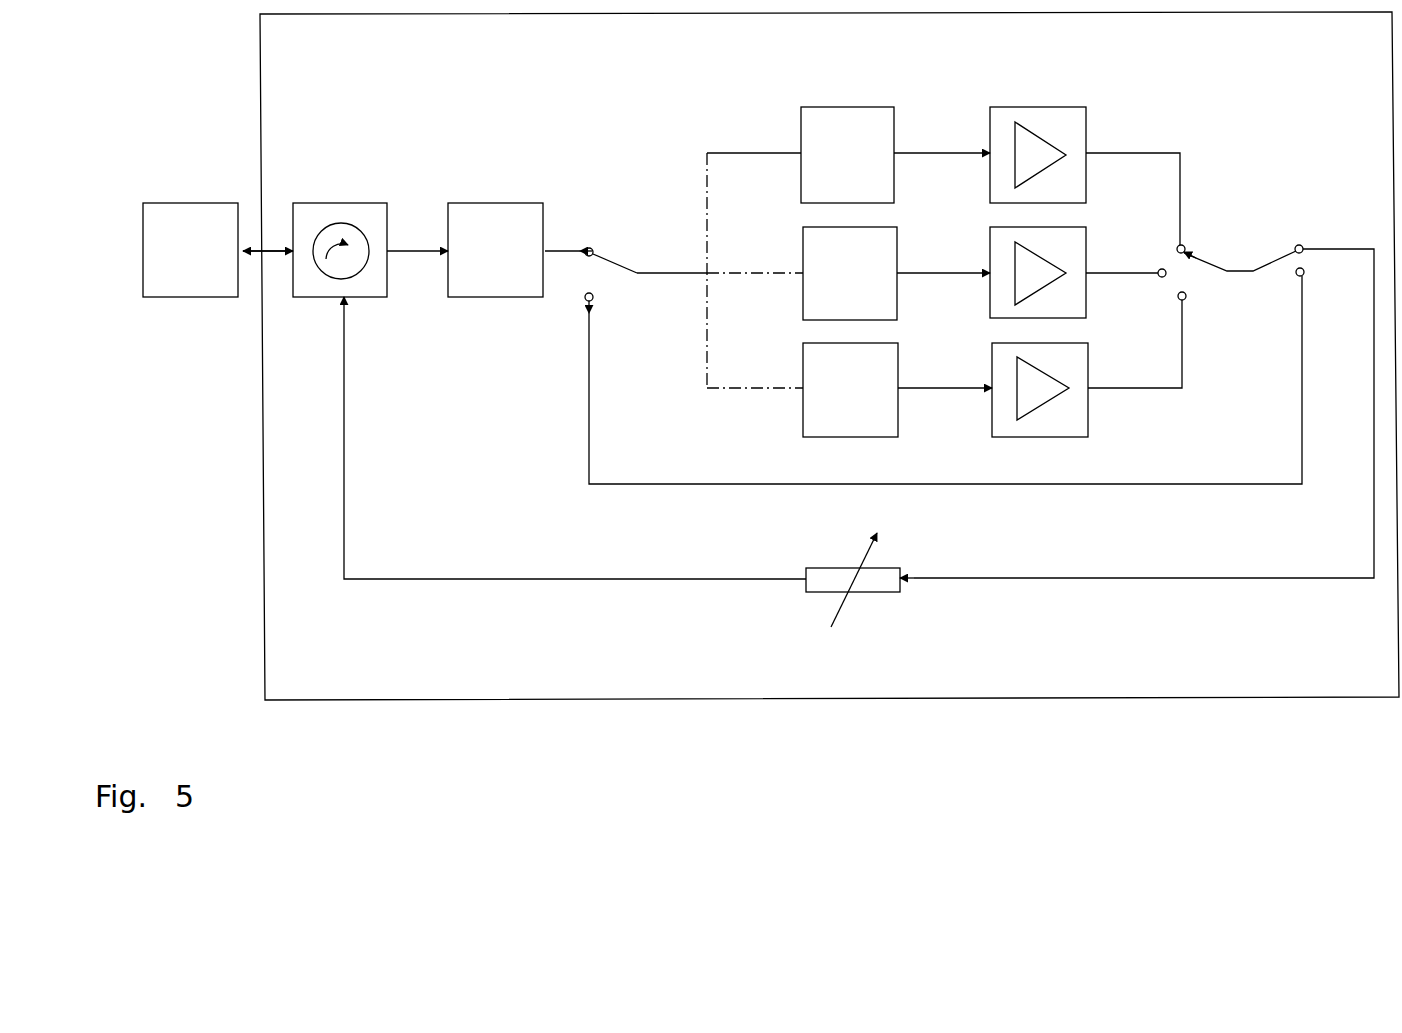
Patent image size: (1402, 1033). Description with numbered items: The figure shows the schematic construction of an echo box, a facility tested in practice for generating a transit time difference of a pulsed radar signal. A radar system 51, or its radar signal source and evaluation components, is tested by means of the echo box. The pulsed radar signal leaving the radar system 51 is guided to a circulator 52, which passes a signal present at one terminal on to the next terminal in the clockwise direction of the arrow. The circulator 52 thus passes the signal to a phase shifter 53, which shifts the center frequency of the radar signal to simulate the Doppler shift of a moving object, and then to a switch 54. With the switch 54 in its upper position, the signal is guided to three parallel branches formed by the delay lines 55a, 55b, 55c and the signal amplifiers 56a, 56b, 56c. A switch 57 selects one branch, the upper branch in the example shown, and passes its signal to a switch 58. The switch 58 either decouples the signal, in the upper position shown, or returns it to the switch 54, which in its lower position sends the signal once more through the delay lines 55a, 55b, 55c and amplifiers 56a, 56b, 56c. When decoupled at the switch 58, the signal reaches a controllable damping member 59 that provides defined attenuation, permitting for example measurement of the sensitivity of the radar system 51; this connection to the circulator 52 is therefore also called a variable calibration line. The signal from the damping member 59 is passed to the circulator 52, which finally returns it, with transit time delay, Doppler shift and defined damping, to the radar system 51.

The radar system 51 is at (190, 250).
The circulator 52 is at (366, 216).
The phase shifter 53 is at (495, 250).
The switch 54 is at (615, 248).
The delay line 55a is at (883, 128).
The delay line 55b is at (888, 249).
The delay line 55c is at (888, 403).
The signal amplifier 56a is at (1072, 130).
The signal amplifier 56b is at (1073, 251).
The signal amplifier 56c is at (1078, 403).
The switch 57 is at (1193, 246).
The switch 58 is at (1278, 248).
The controllable damping member 59 is at (855, 605).